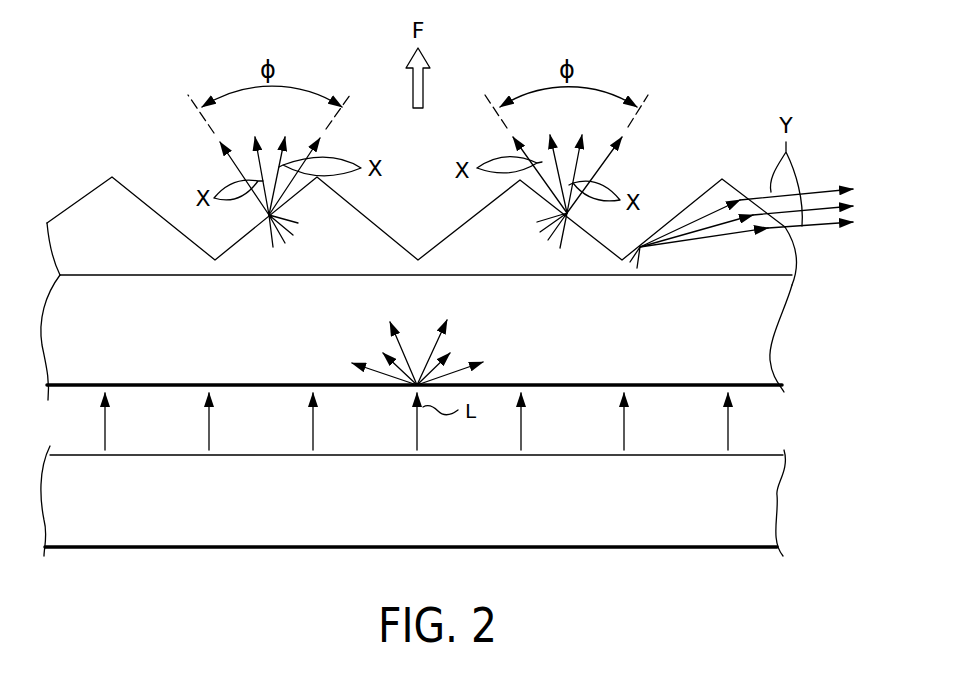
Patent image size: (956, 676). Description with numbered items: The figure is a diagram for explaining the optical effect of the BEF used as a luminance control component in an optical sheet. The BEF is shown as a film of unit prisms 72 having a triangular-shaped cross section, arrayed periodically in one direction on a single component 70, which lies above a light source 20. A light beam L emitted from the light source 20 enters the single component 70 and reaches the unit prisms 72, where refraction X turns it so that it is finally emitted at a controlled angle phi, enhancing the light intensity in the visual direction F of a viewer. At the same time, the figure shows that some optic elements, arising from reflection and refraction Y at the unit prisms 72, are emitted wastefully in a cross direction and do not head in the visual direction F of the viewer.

The unit prism 72 is at (780, 263).
The single component 70 is at (767, 357).
The light source 20 is at (777, 493).